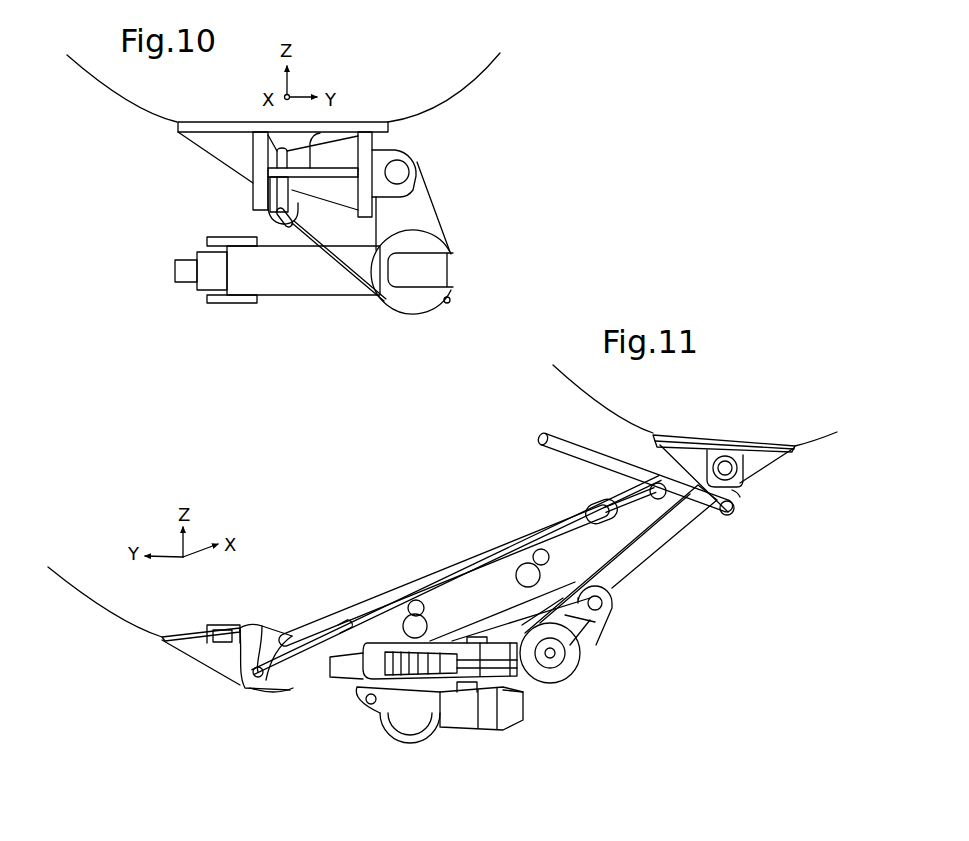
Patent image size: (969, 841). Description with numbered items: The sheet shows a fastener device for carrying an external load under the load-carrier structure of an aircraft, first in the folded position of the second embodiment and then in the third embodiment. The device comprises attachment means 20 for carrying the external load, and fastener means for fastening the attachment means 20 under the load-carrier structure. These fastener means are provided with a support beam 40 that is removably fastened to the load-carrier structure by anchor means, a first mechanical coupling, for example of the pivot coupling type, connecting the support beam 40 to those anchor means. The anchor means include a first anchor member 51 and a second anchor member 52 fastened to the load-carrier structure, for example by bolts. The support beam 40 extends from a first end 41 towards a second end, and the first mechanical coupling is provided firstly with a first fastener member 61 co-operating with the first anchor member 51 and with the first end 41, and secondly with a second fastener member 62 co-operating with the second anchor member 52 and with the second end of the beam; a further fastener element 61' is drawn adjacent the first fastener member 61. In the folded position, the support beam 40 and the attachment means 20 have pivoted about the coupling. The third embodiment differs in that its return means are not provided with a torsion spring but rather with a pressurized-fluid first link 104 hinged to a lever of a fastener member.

In FIG. 10, the attachment means 20 is at (303, 281).
In FIG. 10, the support beam 40 is at (367, 145).
In FIG. 11, the support beam 40 is at (468, 580).
In FIG. 11, the first end 41 is at (706, 517).
In FIG. 11, the first anchor member 51 is at (767, 437).
In FIG. 11, the second anchor member 52 is at (252, 627).
In FIG. 11, the first fastener member 61 is at (752, 544).
In FIG. 11, the pivot joint bushing 61' is at (770, 493).
In FIG. 11, the second fastener member 62 is at (257, 690).
In FIG. 11, the pressurized-fluid first link 104 is at (555, 462).